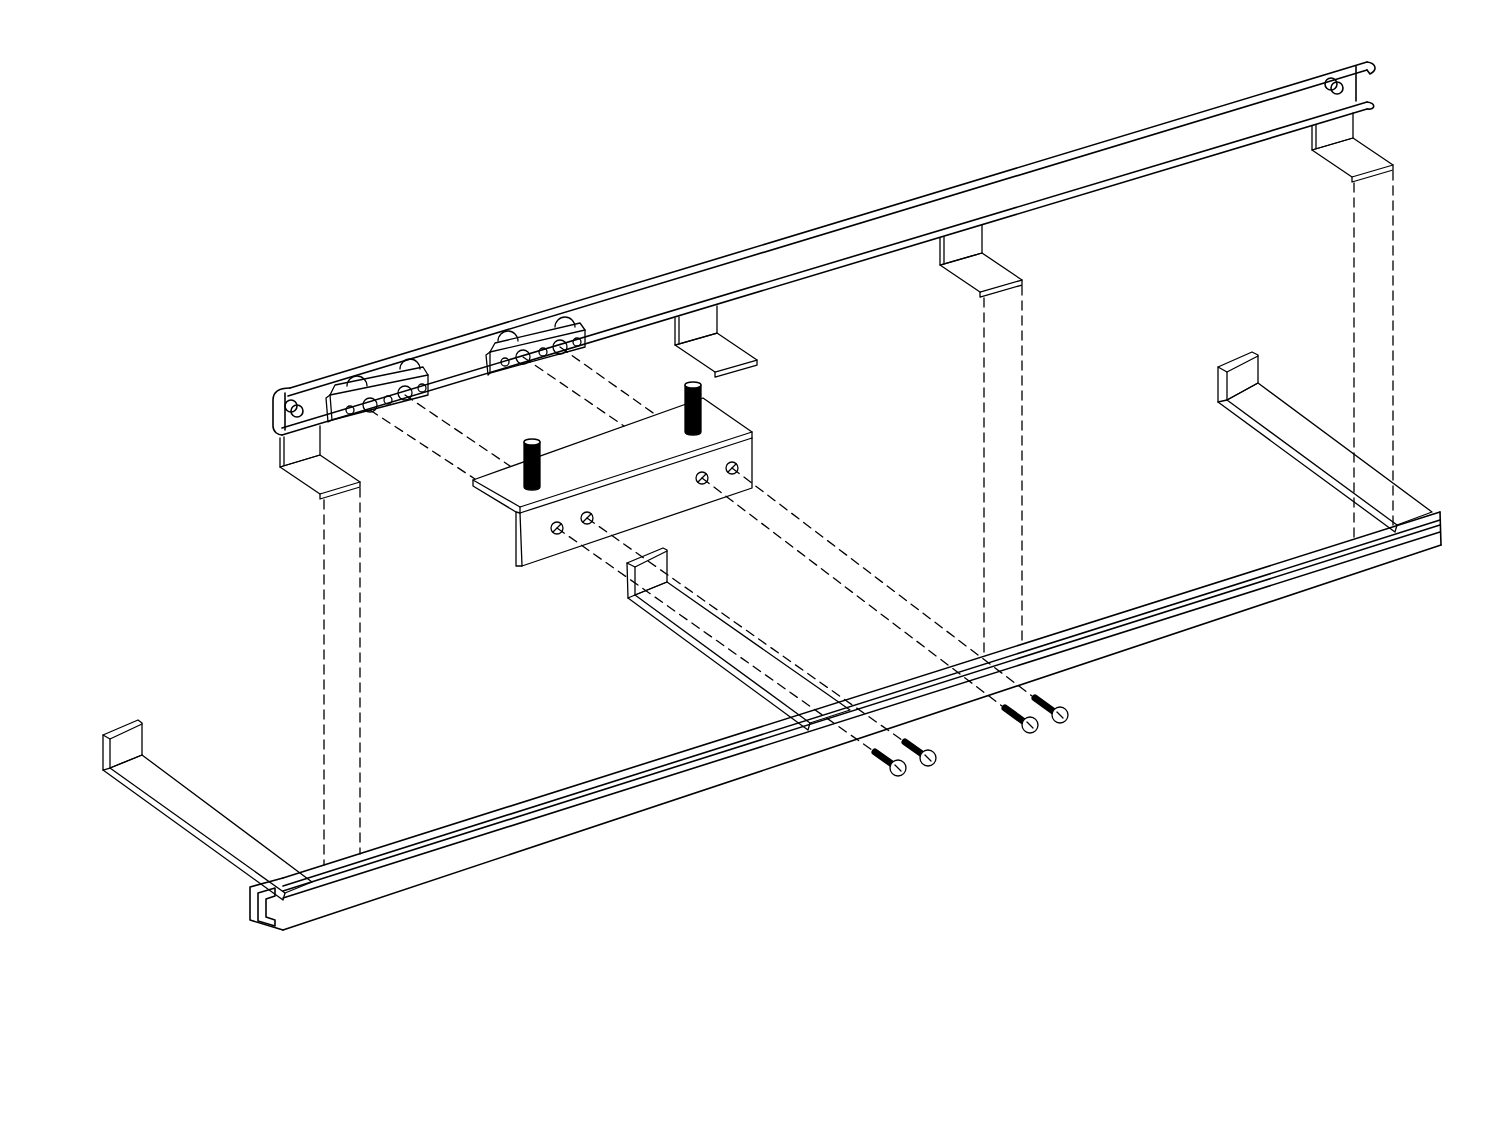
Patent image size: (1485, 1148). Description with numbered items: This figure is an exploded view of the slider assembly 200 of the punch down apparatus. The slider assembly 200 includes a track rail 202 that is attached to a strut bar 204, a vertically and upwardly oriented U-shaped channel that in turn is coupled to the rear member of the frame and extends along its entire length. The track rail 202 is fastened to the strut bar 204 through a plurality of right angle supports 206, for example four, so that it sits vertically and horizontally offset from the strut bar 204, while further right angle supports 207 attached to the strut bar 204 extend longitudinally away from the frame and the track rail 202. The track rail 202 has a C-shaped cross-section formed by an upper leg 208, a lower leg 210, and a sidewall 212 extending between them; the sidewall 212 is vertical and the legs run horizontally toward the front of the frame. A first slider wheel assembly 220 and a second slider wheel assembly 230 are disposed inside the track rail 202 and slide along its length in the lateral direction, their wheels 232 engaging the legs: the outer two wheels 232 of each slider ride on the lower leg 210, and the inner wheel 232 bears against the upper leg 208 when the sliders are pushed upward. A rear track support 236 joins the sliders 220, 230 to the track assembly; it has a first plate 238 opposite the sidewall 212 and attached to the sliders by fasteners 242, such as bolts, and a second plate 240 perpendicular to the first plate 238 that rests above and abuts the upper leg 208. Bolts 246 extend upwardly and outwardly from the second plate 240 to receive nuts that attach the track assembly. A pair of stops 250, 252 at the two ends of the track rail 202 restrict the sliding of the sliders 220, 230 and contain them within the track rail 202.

The slider assembly 200 is at (522, 194).
The track rail 202 is at (1372, 62).
The strut bar 204 is at (508, 823).
The right angle supports 206 is at (1360, 158).
The right angle supports 207 is at (1255, 408).
The upper leg 208 is at (1110, 140).
The lower leg 210 is at (1288, 130).
The sidewall 212 is at (1357, 108).
The first slider wheel assembly 220 is at (387, 367).
The second slider wheel assembly 230 is at (500, 325).
The wheels 232 is at (345, 372).
The rear track support 236 is at (535, 568).
The first plate 238 is at (752, 465).
The second plate 240 is at (520, 510).
The fasteners 242 is at (1052, 732).
The bolts 246 is at (703, 397).
The stop 250 is at (292, 390).
The stop 252 is at (1313, 98).